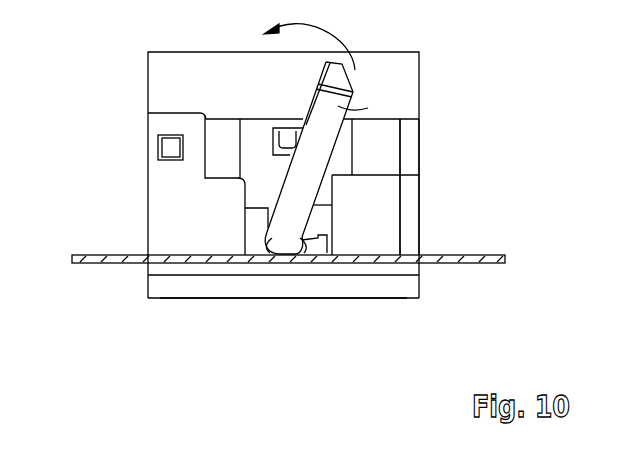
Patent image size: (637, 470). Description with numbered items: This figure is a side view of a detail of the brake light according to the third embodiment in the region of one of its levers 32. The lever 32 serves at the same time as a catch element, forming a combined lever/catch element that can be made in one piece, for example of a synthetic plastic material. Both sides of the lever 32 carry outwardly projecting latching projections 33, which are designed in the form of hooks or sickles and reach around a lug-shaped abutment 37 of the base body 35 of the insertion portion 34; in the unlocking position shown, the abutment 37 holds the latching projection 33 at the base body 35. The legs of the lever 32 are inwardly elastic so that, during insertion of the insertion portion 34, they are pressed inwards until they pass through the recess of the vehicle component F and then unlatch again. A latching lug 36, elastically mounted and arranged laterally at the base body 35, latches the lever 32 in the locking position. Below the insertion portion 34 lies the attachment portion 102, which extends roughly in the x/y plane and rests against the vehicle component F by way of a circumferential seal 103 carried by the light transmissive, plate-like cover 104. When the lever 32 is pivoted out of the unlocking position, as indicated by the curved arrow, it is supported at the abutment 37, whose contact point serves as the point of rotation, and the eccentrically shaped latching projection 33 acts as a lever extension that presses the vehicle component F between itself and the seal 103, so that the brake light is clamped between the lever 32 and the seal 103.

The lever 32 is at (356, 95).
The latching projection 33 is at (275, 238).
The insertion portion 34 is at (62, 52).
The base body 35 is at (410, 153).
The latching lug 36 is at (286, 128).
The abutment 37 is at (304, 240).
The attachment portion 102 is at (62, 265).
The seal 103 is at (413, 270).
The cover 104 is at (369, 290).
The vehicle component F is at (478, 262).